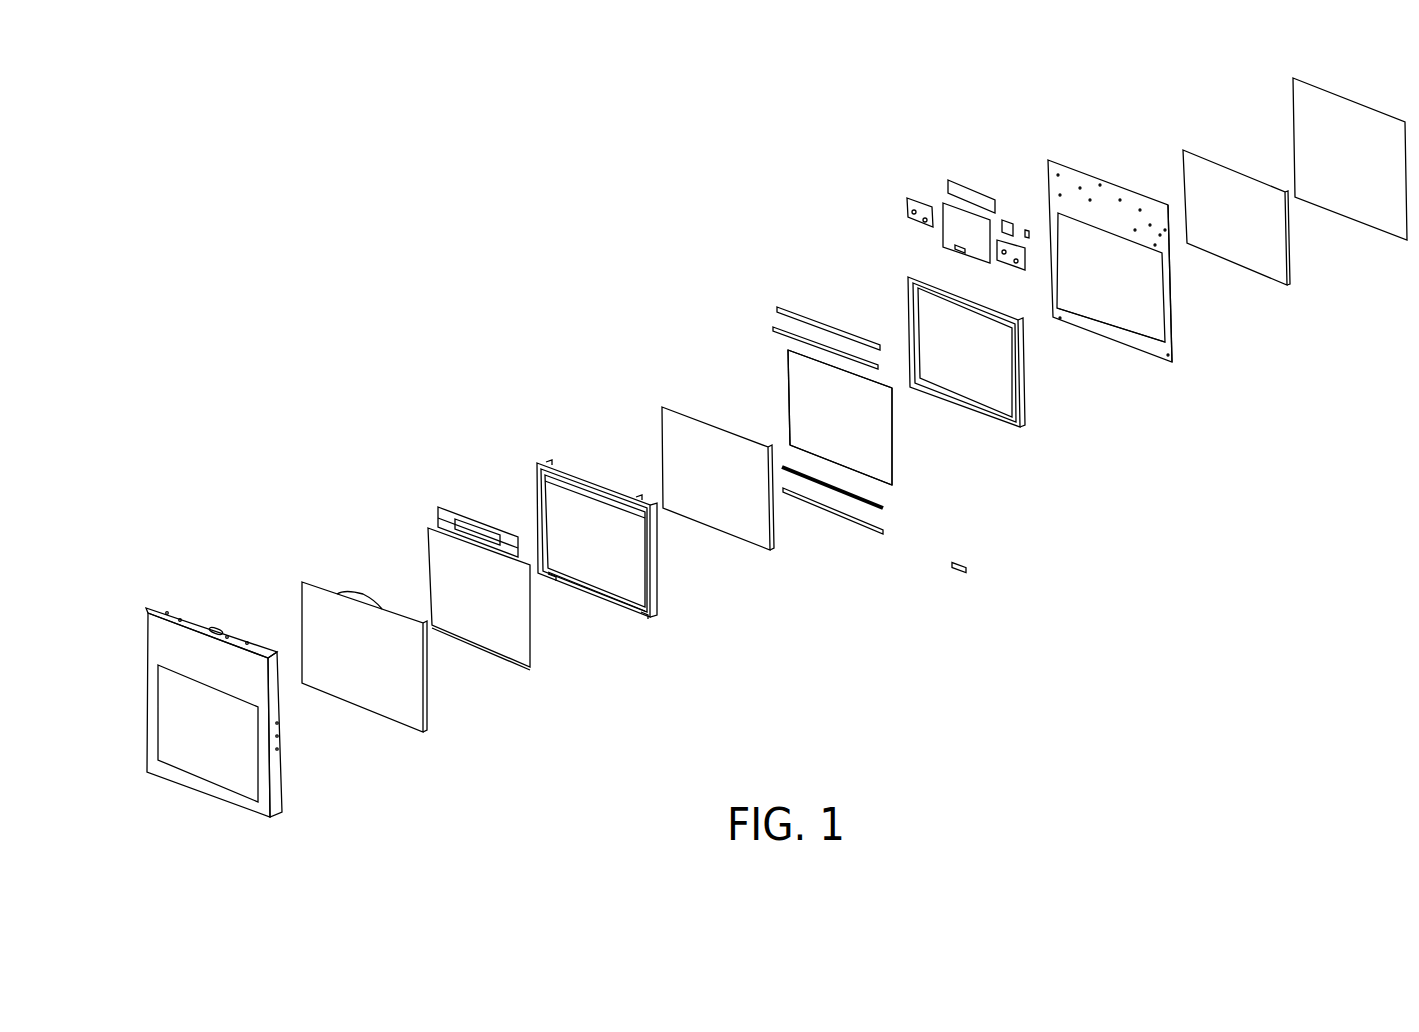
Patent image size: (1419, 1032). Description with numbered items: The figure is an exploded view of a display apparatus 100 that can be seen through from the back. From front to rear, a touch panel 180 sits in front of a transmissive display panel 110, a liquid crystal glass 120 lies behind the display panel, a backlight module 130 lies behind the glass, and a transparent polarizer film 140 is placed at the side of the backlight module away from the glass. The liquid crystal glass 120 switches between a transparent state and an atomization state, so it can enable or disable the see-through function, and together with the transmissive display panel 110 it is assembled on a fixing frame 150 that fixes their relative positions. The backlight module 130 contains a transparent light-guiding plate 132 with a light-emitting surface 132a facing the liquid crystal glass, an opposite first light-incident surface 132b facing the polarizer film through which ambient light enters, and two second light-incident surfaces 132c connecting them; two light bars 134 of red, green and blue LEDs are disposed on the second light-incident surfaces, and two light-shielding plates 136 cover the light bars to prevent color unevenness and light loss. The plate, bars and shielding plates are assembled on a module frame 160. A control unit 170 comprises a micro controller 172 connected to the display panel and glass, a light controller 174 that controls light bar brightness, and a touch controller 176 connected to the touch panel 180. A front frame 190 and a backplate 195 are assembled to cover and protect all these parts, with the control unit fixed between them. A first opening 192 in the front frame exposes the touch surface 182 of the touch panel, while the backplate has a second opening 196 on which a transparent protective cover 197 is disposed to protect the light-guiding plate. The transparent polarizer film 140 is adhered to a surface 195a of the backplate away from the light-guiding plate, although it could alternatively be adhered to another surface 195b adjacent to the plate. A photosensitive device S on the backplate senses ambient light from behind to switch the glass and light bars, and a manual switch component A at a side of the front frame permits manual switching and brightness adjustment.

The display apparatus 100 is at (1170, 650).
The transmissive display panel 110 is at (522, 628).
The liquid crystal glass 120 is at (760, 523).
The backlight module 130 is at (860, 417).
The transparent light-guiding plate 132 is at (837, 398).
The light-emitting surface 132a is at (786, 360).
The first light-incident surface 132b is at (893, 412).
The second light-incident surface 132c is at (817, 342).
The light bar 134 is at (813, 352).
The light-shielding plate 136 is at (853, 332).
The transparent polarizer film 140 is at (1390, 217).
The fixing frame 150 is at (658, 578).
The module frame 160 is at (1027, 400).
The control unit 170 is at (931, 318).
The micro controller 172 is at (950, 230).
The light controller 174 is at (908, 198).
The touch controller 176 is at (971, 161).
The touch panel 180 is at (385, 682).
The touch surface 182 is at (393, 695).
The front frame 190 is at (240, 718).
The first opening 192 is at (258, 747).
The backplate 195 is at (1150, 287).
The surface of the backplate away from the transparent light-guiding plate 195a is at (1175, 303).
The surface of the backplate adjacent to the transparent light-guiding plate 195b is at (1125, 338).
The second opening 196 is at (1062, 270).
The protective cover 197 is at (1275, 262).
The manual switch component A is at (215, 633).
The photosensitive device S is at (1028, 230).